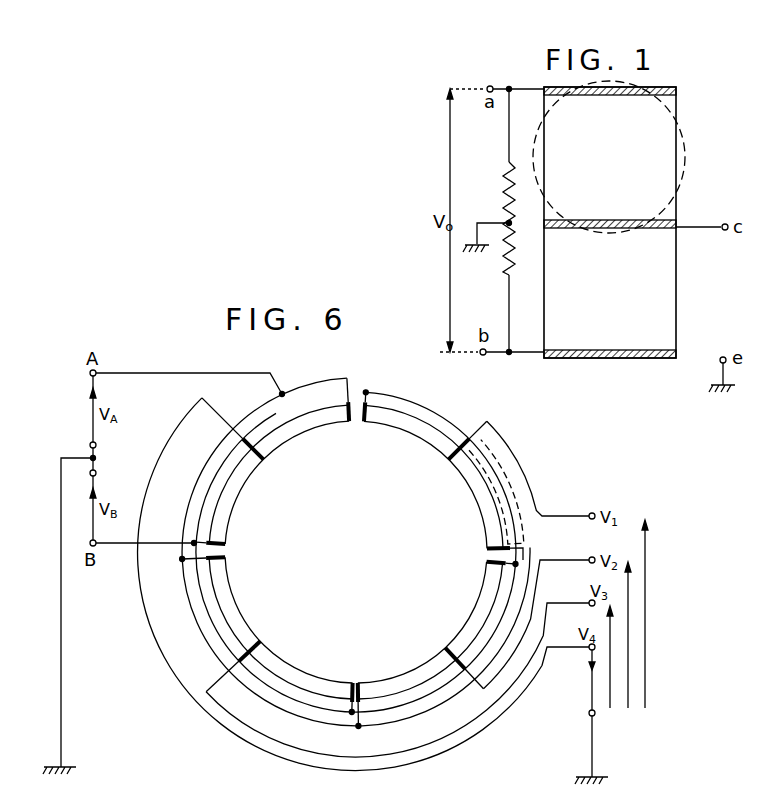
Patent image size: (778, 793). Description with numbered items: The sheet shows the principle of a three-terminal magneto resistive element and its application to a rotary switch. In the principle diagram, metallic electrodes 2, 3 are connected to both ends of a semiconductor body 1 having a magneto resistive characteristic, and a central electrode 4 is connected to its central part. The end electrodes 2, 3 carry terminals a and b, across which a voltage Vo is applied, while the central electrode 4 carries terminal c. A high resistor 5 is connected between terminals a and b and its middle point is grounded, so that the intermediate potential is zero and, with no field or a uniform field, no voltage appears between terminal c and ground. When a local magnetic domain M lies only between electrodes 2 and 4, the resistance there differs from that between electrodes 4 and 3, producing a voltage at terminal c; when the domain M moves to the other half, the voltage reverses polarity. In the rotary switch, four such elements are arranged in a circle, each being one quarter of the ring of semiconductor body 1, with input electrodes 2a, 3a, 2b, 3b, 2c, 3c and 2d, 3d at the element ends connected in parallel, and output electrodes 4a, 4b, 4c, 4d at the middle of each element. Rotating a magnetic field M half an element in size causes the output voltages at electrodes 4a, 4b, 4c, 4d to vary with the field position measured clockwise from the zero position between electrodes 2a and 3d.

In FIG. 1, the semiconductor body 1 is at (660, 292).
In FIG. 6, the semiconductor body 1 is at (308, 412).
In FIG. 1, the end electrode 2 is at (660, 90).
In FIG. 1, the end electrode 3 is at (623, 360).
In FIG. 1, the central electrode 4 is at (675, 222).
In FIG. 1, the high resistor 5 is at (512, 266).
In FIG. 1, the magnetic domain M is at (686, 158).
In FIG. 6, the magnetic domain M is at (492, 493).
In FIG. 6, the input electrode 2a is at (364, 422).
In FIG. 6, the input electrode 2b is at (478, 565).
In FIG. 6, the input electrode 2c is at (352, 683).
In FIG. 6, the input electrode 2d is at (226, 543).
In FIG. 6, the input electrode 3a is at (478, 548).
In FIG. 6, the input electrode 3b is at (358, 683).
In FIG. 6, the input electrode 3c is at (226, 558).
In FIG. 6, the input electrode 3d is at (349, 422).
In FIG. 6, the output electrode 4a is at (448, 448).
In FIG. 6, the output electrode 4b is at (445, 648).
In FIG. 6, the output electrode 4c is at (266, 636).
In FIG. 6, the output electrode 4d is at (263, 459).